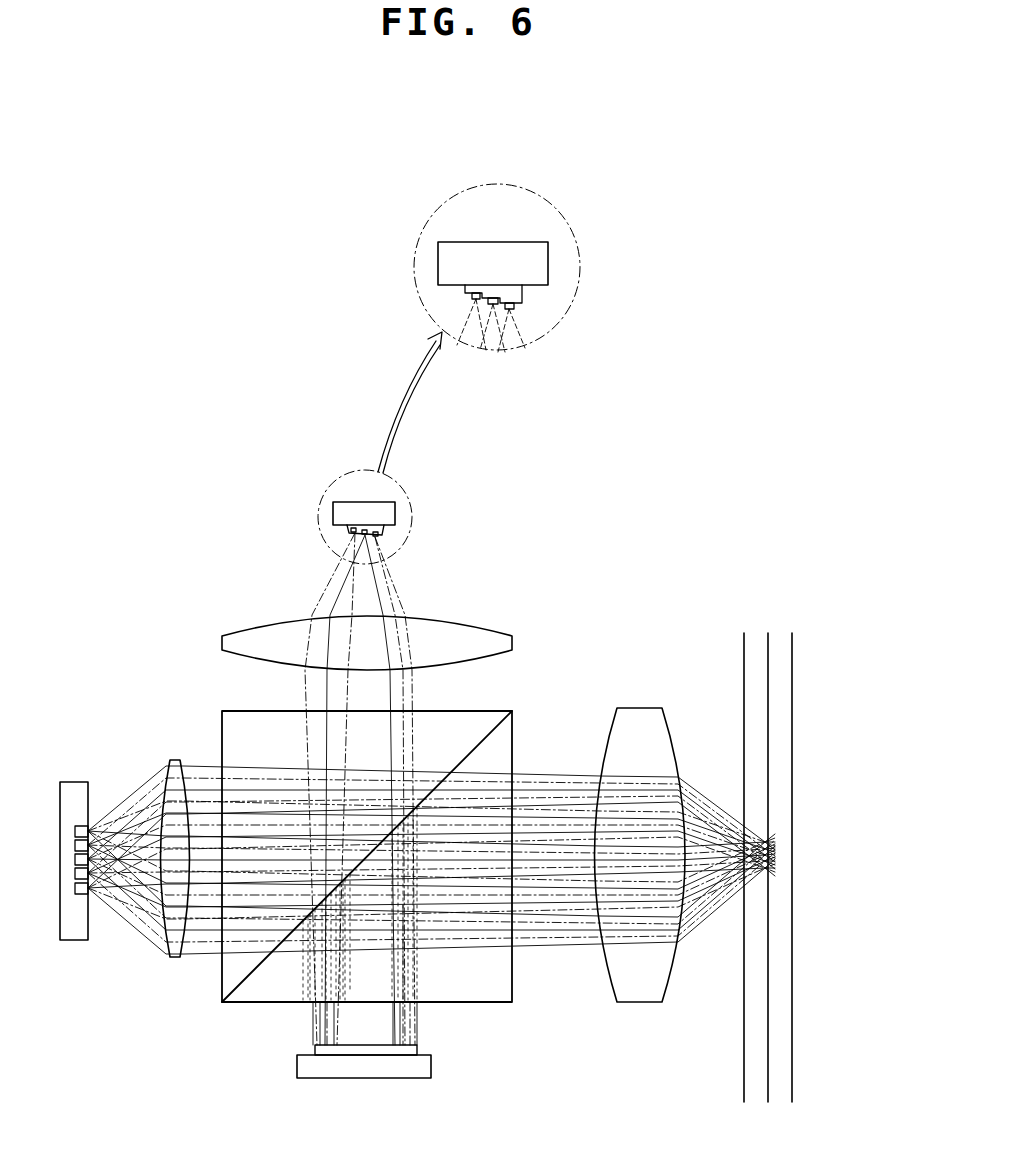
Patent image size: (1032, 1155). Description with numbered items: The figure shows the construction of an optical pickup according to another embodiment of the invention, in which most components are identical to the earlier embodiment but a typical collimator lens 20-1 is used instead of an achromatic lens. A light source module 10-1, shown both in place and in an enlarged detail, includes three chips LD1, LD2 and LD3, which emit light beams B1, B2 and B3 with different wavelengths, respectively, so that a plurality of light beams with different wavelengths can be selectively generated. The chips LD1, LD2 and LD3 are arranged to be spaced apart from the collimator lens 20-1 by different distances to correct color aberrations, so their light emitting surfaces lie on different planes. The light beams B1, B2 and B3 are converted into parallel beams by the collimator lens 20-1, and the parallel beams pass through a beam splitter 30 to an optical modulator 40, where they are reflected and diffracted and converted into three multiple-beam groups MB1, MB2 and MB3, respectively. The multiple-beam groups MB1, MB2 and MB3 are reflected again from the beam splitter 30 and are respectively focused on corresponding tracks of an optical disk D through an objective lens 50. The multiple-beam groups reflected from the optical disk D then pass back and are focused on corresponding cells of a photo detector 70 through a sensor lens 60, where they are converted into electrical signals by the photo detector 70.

The light source module 10-1 is at (498, 250).
The chip LD1 is at (483, 310).
The chip LD2 is at (472, 297).
The chip LD3 is at (520, 306).
The light beam B1 is at (345, 597).
The light beam B2 is at (335, 568).
The light beam B3 is at (400, 600).
The collimator lens 20-1 is at (465, 640).
The beam splitter 30 is at (497, 758).
The optical modulator 40 is at (312, 1068).
The multiple-beam group MB1 is at (400, 1040).
The multiple-beam group MB2 is at (313, 1012).
The multiple-beam group MB3 is at (420, 1023).
The objective lens 50 is at (645, 710).
The sensor lens 60 is at (177, 762).
The photo detector 70 is at (73, 782).
The optical disk D is at (782, 675).